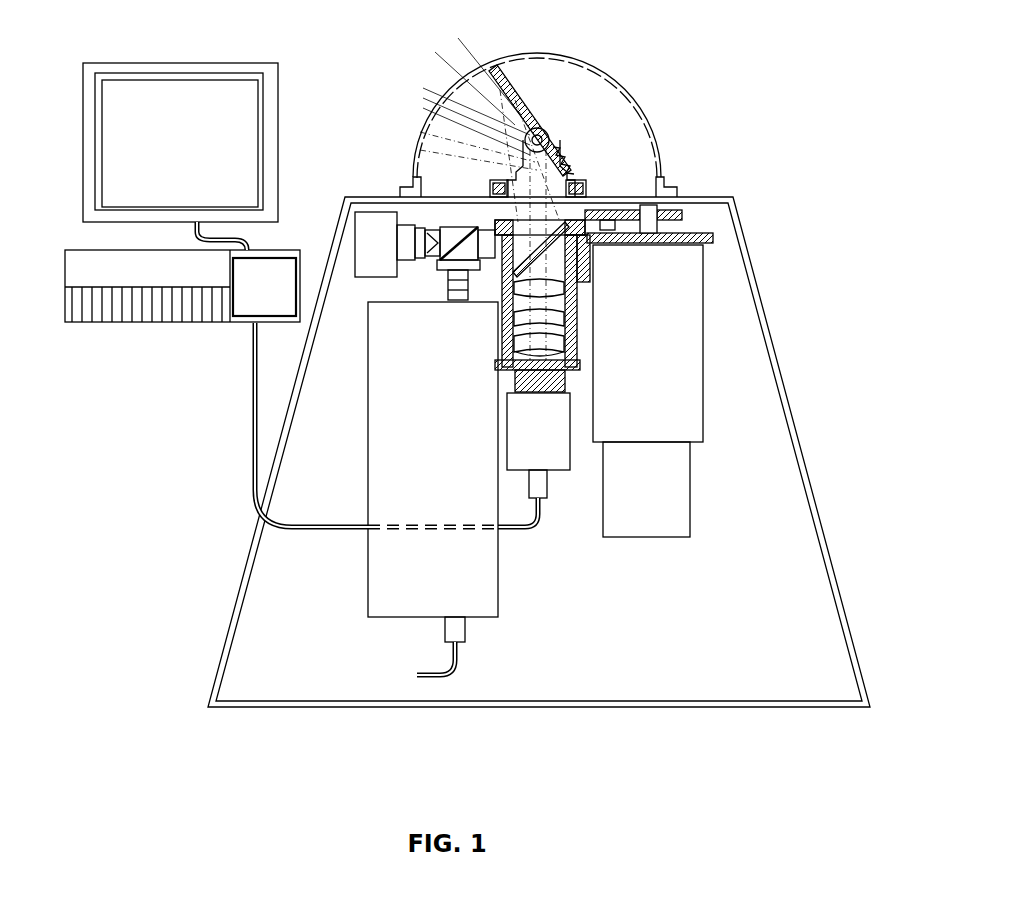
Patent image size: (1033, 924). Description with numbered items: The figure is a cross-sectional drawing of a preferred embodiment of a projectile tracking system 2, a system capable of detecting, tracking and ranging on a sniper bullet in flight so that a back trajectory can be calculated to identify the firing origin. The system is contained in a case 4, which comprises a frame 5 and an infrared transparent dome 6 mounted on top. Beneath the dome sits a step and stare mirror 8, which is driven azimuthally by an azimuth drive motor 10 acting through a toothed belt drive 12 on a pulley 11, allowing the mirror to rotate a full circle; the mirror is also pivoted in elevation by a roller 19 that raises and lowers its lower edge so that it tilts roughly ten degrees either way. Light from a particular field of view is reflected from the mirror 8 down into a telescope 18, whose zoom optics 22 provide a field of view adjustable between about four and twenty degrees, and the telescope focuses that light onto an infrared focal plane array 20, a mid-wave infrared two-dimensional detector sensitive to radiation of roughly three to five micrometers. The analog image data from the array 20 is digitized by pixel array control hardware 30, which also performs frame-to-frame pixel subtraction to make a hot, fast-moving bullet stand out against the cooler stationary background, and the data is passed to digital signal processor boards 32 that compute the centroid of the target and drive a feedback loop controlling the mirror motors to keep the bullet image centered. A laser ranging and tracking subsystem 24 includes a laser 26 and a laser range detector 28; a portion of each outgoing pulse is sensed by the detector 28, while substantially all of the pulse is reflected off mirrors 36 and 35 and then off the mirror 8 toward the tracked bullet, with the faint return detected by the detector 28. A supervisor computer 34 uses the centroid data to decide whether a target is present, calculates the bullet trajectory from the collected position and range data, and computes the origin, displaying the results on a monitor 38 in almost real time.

The system 2 is at (797, 60).
The case 4 is at (378, 68).
The frame 5 is at (806, 442).
The infrared transparent dome 6 is at (655, 140).
The step and stare mirror 8 is at (510, 95).
The azimuth drive motor 10 is at (648, 391).
The pulley 11 is at (585, 205).
The toothed belt drive 12 is at (595, 218).
The telescope 18 is at (589, 388).
The roller 19 is at (590, 172).
The infrared focal plane array 20 is at (533, 393).
The zoom optics 22 is at (594, 318).
The laser ranging and tracking subsystem 24 is at (316, 448).
The laser 26 is at (433, 488).
The laser range detector 28 is at (368, 222).
The pixel array control hardware 30 is at (556, 465).
The digital signal processor boards 32 is at (250, 322).
The supervisor computer 34 is at (88, 263).
The mirror 35 is at (583, 278).
The mirror 36 is at (447, 227).
The monitor 38 is at (243, 100).